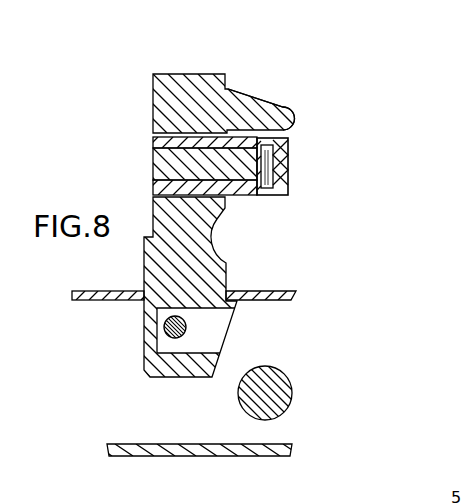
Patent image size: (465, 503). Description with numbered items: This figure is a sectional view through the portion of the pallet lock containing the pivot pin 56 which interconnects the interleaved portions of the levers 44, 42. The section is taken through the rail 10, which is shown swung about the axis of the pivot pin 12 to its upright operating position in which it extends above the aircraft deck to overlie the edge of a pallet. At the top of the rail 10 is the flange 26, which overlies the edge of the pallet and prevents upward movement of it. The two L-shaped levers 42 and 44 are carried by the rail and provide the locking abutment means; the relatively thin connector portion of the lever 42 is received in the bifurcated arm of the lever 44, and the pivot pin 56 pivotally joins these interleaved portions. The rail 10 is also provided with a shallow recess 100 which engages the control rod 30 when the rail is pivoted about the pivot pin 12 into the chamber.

The rail 10 is at (172, 74).
The flange 26 is at (263, 101).
The lever 44 is at (153, 143).
The lever 42 is at (153, 171).
The pivot pin 56 is at (273, 164).
The shallow recess 100 is at (218, 246).
The pivot pin 12 is at (186, 326).
The control rod 30 is at (282, 396).